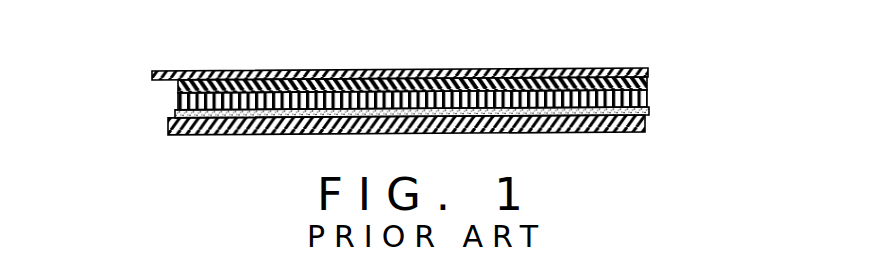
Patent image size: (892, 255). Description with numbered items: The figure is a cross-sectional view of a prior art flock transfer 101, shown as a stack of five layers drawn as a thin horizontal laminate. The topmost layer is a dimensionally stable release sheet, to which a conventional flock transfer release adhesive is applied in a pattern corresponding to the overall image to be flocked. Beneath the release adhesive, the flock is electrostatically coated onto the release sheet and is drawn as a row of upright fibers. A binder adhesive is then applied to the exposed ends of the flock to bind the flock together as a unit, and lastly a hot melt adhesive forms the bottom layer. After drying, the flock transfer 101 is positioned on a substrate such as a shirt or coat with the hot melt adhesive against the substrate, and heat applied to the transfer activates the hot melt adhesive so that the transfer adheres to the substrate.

The prior art flock transfer 101 is at (361, 117).